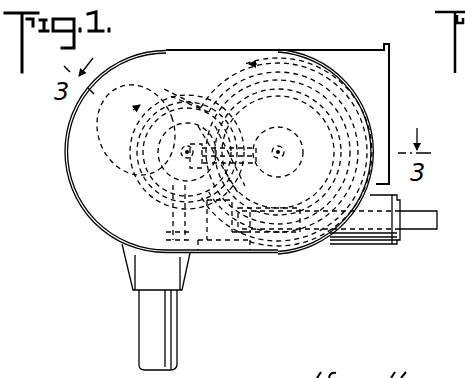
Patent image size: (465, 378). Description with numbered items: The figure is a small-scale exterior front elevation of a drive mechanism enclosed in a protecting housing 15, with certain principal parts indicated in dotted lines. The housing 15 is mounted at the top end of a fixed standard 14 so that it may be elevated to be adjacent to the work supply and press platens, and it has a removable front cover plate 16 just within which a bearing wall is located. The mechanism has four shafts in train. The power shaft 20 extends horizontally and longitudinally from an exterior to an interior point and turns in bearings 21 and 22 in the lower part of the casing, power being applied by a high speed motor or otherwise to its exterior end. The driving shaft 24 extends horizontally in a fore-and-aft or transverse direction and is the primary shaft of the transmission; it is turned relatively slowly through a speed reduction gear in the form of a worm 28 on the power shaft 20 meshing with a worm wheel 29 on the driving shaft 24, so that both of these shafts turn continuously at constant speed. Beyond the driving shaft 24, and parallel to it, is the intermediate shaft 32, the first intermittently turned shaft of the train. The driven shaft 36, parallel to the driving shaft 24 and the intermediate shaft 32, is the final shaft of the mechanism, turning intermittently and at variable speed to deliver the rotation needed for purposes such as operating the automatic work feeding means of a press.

The fixed standard 14 is at (168, 330).
The housing 15 is at (301, 243).
The removable front cover plate 16 is at (233, 53).
The power shaft 20 is at (432, 226).
The bearing 21 is at (385, 240).
The bearing 22 is at (227, 232).
The driving shaft 24 is at (279, 146).
The worm 28 is at (316, 241).
The worm wheel 29 is at (323, 110).
The intermediate shaft 32 is at (178, 152).
The driven shaft 36 is at (189, 142).